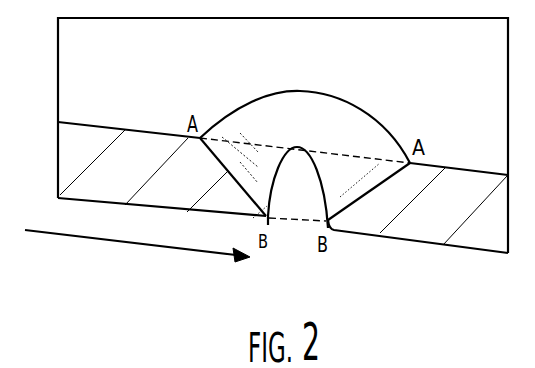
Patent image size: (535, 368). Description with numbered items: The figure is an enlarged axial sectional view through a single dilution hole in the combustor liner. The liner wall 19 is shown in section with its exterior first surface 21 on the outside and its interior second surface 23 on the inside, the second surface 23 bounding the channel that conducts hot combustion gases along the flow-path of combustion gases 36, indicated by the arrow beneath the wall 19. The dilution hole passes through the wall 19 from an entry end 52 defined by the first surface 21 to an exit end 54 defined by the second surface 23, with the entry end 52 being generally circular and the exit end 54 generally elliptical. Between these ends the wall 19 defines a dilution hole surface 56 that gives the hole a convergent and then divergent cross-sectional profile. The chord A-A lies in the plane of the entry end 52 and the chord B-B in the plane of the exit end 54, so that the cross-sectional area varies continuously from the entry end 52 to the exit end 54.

The wall 19 is at (430, 205).
The first surface 21 is at (434, 85).
The second surface 23 is at (355, 236).
The flow-path of combustion gases 36 is at (118, 241).
The entry end 52 is at (247, 103).
The exit end 54 is at (268, 220).
The dilution hole surface 56 is at (281, 136).